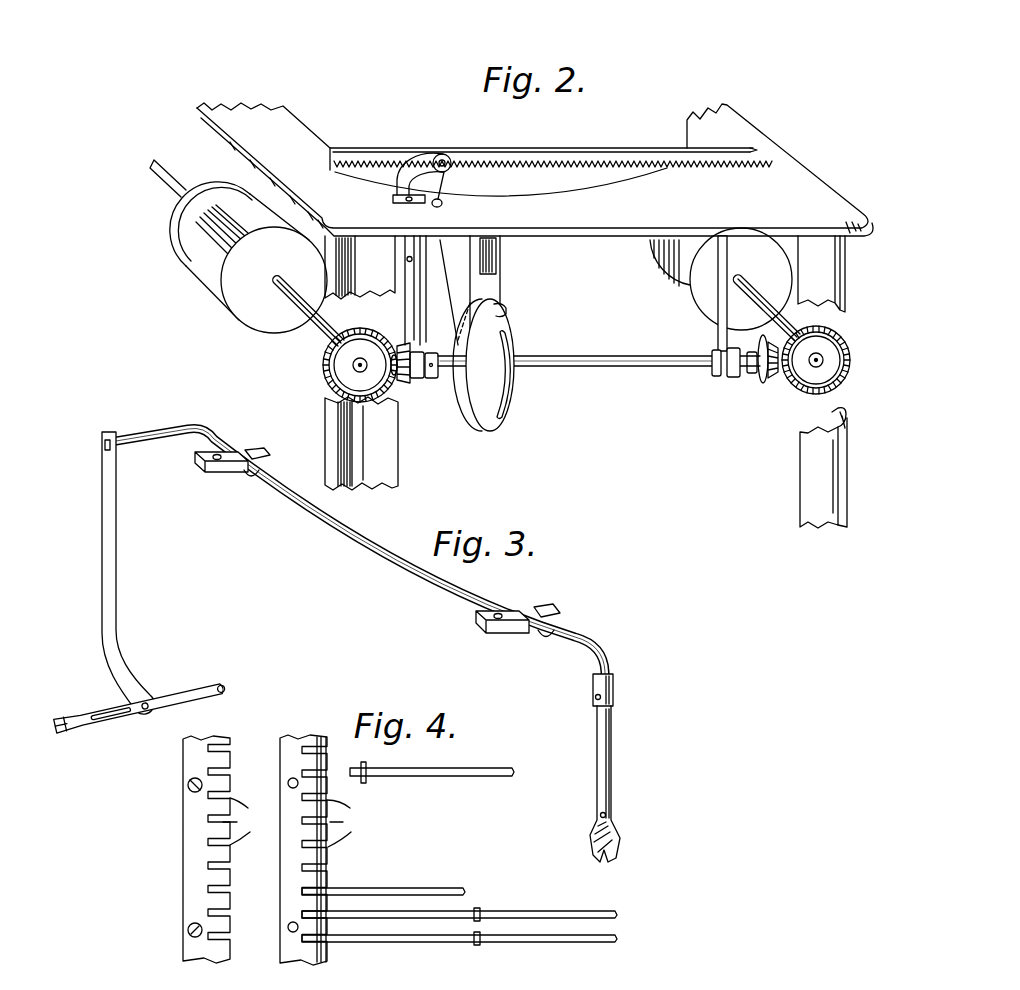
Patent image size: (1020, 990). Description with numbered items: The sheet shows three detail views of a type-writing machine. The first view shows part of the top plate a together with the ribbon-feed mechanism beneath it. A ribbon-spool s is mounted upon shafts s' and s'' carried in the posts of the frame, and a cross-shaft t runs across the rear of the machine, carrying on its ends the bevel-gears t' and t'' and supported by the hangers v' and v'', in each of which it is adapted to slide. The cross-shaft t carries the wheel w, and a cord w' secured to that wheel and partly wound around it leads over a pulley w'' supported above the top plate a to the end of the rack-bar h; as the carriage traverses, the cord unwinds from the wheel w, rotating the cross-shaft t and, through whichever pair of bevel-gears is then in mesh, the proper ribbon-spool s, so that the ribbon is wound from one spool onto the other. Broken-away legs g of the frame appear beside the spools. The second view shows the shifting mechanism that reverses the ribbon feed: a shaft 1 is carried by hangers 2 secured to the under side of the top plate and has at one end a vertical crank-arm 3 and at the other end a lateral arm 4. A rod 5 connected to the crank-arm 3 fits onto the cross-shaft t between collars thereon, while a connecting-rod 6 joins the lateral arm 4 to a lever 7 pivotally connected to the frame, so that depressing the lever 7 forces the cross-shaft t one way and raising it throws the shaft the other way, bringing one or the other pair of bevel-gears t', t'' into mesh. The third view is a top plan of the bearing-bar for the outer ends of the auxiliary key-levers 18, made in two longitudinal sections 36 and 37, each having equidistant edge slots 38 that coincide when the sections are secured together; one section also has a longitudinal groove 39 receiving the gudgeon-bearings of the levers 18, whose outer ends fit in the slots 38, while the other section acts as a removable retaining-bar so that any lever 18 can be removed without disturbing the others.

In FIG. 2, the top plate a is at (535, 169).
In FIG. 2, the rack-bar h is at (551, 144).
In FIG. 2, the wheel w is at (494, 365).
In FIG. 2, the cord w' is at (511, 272).
In FIG. 2, the pulley w'' is at (437, 155).
In FIG. 2, the ribbon-spool s is at (471, 246).
In FIG. 2, the spool shaft s' is at (308, 311).
In FIG. 2, the spool shaft s'' is at (766, 307).
In FIG. 2, the cross-shaft t is at (585, 373).
In FIG. 2, the bevel-gear t' is at (804, 366).
In FIG. 2, the bevel-gear t'' is at (376, 365).
In FIG. 2, the hanger v' is at (499, 311).
In FIG. 2, the hanger v'' is at (709, 306).
In FIG. 2, the leg g is at (586, 382).
In FIG. 3, the shaft 1 is at (360, 558).
In FIG. 3, the hangers 2 is at (377, 554).
In FIG. 2, the vertical crank-arm 3 is at (423, 290).
In FIG. 3, the vertical crank-arm 3 is at (612, 678).
In FIG. 3, the lateral arm 4 is at (131, 456).
In FIG. 2, the rod 5 is at (430, 290).
In FIG. 3, the rod 5 is at (612, 784).
In FIG. 3, the connecting-rod 6 is at (128, 573).
In FIG. 3, the lever 7 is at (140, 699).
In FIG. 4, the auxiliary key-levers 18 is at (459, 863).
In FIG. 4, the bar section 36 is at (206, 849).
In FIG. 4, the bar section 37 is at (289, 738).
In FIG. 4, the edge slots 38 is at (298, 822).
In FIG. 4, the longitudinal groove 39 is at (316, 738).